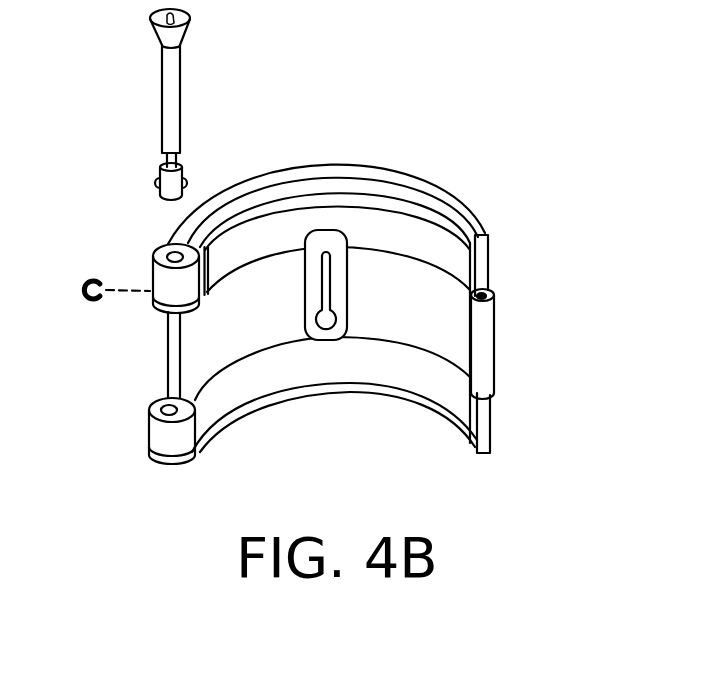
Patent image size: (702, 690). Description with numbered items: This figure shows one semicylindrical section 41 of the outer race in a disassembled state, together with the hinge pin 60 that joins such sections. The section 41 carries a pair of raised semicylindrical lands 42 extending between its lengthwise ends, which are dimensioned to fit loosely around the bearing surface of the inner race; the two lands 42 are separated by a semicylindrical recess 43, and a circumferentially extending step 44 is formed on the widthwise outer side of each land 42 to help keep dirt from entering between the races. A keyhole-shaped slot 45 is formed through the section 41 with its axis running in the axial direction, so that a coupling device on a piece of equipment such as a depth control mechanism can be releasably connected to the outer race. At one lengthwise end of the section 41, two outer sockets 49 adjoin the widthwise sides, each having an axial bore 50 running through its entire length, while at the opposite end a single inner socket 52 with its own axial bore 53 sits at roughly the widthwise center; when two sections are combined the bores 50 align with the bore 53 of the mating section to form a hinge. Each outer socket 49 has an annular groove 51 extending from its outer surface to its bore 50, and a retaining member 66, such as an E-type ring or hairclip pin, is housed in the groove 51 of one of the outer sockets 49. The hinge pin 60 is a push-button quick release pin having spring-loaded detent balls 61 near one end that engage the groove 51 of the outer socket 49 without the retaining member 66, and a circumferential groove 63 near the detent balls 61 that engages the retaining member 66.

The semicylindrical section 41 is at (493, 424).
The raised semicylindrical land 42 is at (407, 232).
The semicylindrical recess 43 is at (420, 326).
The circumferentially extending step 44 is at (322, 203).
The keyhole-shaped slot 45 is at (333, 331).
The outer socket 49 is at (151, 423).
The axial bore 50 is at (163, 411).
The annular groove 51 is at (173, 290).
The inner socket 52 is at (495, 348).
The axial bore 53 is at (484, 289).
The hinge pin 60 is at (182, 83).
The detent ball 61 is at (158, 183).
The circumferential groove 63 is at (177, 163).
The retaining member 66 is at (80, 292).